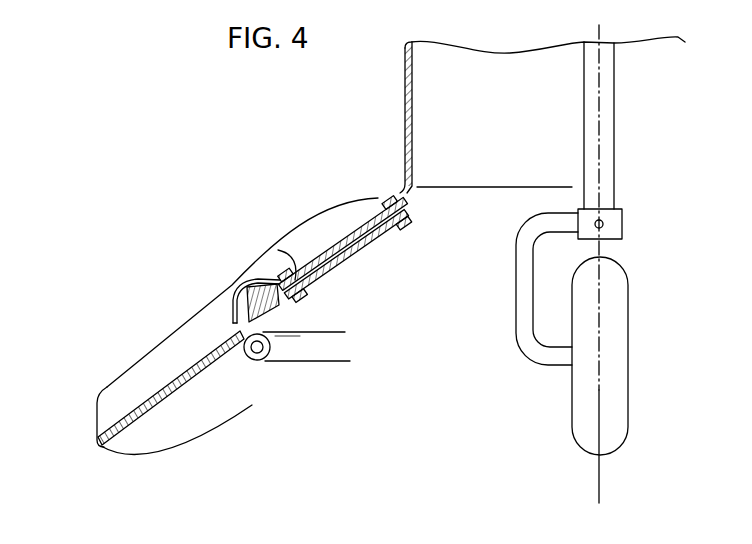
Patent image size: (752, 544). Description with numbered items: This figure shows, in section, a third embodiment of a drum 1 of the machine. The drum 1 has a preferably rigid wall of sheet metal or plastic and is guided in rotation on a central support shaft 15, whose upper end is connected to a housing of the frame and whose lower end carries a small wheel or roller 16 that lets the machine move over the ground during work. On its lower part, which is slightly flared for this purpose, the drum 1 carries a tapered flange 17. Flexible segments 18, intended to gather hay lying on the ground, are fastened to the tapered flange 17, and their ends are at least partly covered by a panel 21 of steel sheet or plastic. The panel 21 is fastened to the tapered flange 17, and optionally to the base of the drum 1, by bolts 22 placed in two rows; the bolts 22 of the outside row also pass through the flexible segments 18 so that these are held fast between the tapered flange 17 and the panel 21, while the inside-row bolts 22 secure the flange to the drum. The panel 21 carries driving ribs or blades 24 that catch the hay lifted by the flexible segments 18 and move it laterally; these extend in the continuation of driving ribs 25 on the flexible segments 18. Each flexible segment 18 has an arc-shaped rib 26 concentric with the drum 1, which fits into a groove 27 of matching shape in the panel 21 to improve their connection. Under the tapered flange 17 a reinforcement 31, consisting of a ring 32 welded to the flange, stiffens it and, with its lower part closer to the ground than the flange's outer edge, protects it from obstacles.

The drum 1 is at (405, 92).
The central support shaft 15 is at (607, 149).
The small wheel or roller 16 is at (580, 409).
The tapered flange 17 is at (340, 257).
The flexible segment 18 is at (138, 405).
The panel 21 is at (356, 222).
The bolt 22 is at (402, 215).
The driving rib or blade 24 is at (312, 238).
The driving rib 25 is at (168, 348).
The arc-shaped rib 26 is at (252, 288).
The groove 27 is at (228, 288).
The reinforcement 31 is at (338, 366).
The ring 32 is at (265, 362).